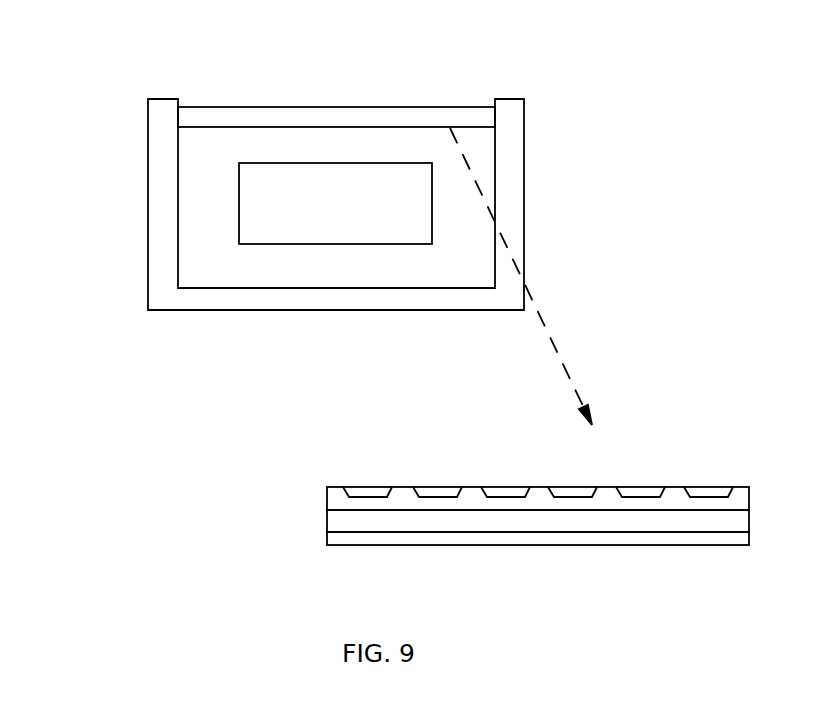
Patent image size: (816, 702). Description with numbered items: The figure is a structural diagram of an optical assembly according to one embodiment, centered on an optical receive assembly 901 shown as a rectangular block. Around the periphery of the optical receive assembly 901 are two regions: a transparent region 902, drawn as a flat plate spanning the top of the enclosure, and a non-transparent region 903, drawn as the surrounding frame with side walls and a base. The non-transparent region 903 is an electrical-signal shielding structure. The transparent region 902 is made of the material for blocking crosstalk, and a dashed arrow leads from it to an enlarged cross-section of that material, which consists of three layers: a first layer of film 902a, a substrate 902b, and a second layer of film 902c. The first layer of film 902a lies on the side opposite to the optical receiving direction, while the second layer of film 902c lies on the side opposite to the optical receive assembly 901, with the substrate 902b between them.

The optical receive assembly 901 is at (239, 205).
The transparent region 902 is at (332, 107).
The first layer of film 902a is at (339, 501).
The substrate 902b is at (365, 520).
The second layer of film 902c is at (497, 537).
The non-transparent region 903 is at (340, 312).